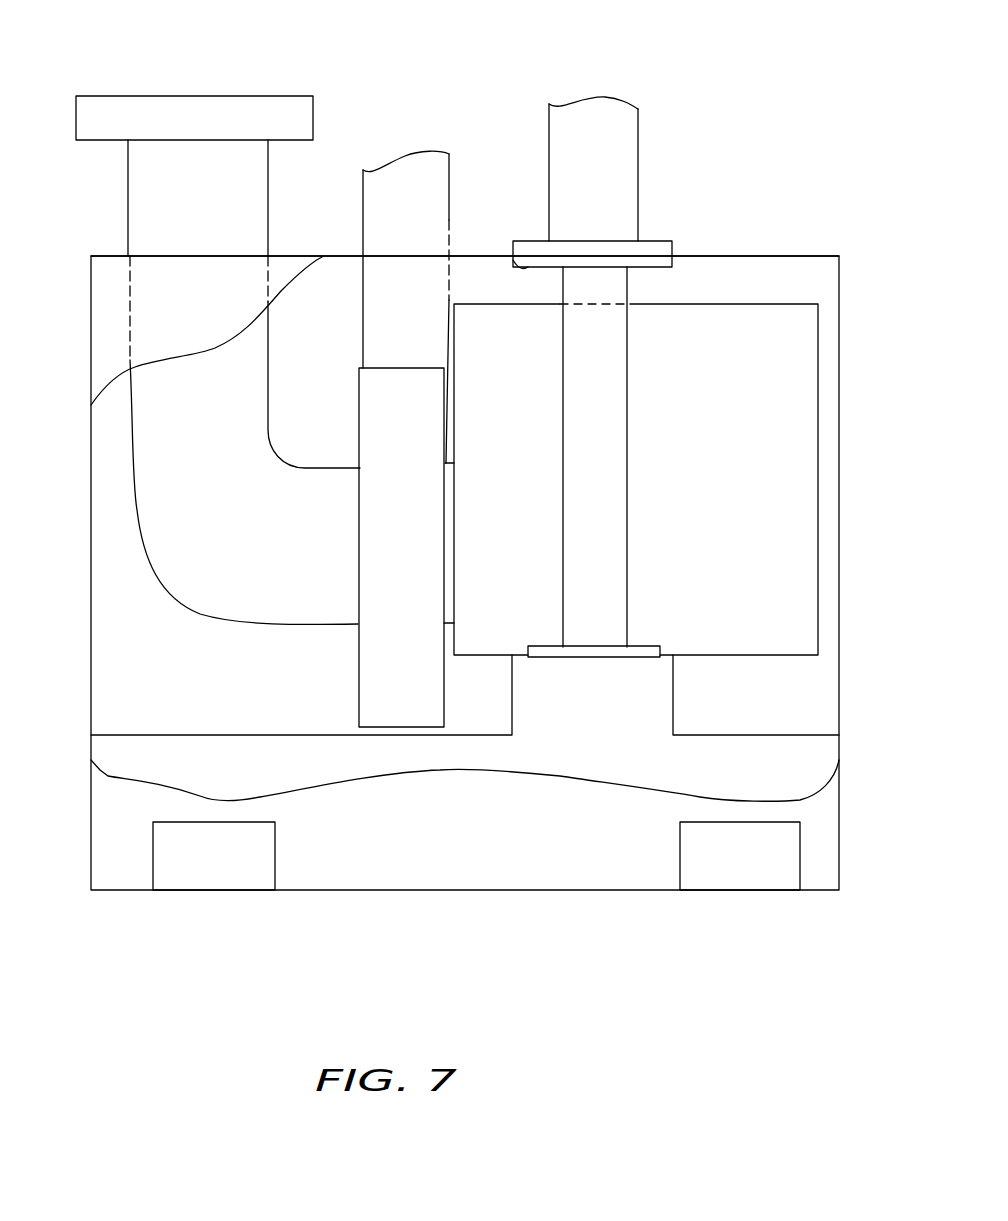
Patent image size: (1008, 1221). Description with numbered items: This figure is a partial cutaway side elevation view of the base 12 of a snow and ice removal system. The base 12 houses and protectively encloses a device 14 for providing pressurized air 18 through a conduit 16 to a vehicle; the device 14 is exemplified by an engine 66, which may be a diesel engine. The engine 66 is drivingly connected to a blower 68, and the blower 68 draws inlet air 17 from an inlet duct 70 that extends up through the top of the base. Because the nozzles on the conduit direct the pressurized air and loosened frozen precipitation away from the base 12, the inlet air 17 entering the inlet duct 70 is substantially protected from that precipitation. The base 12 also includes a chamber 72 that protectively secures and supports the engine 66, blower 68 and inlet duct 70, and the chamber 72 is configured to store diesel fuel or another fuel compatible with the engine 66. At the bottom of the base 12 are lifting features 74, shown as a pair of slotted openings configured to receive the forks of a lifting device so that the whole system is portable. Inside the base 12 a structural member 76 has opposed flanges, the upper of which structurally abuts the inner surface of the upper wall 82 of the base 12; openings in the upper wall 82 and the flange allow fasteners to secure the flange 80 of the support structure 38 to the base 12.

The base 12 is at (569, 926).
The device 14 is at (857, 351).
The conduit 16 is at (377, 176).
The inlet air 17 is at (190, 82).
The pressurized air 18 is at (402, 37).
The support structure 38 is at (641, 153).
The engine 66 is at (748, 447).
The blower 68 is at (357, 680).
The inlet duct 70 is at (128, 213).
The chamber 72 is at (592, 763).
The lifting features 74 is at (198, 862).
The structural member 76 is at (627, 508).
The flange 80 is at (517, 270).
The upper wall 82 is at (762, 256).